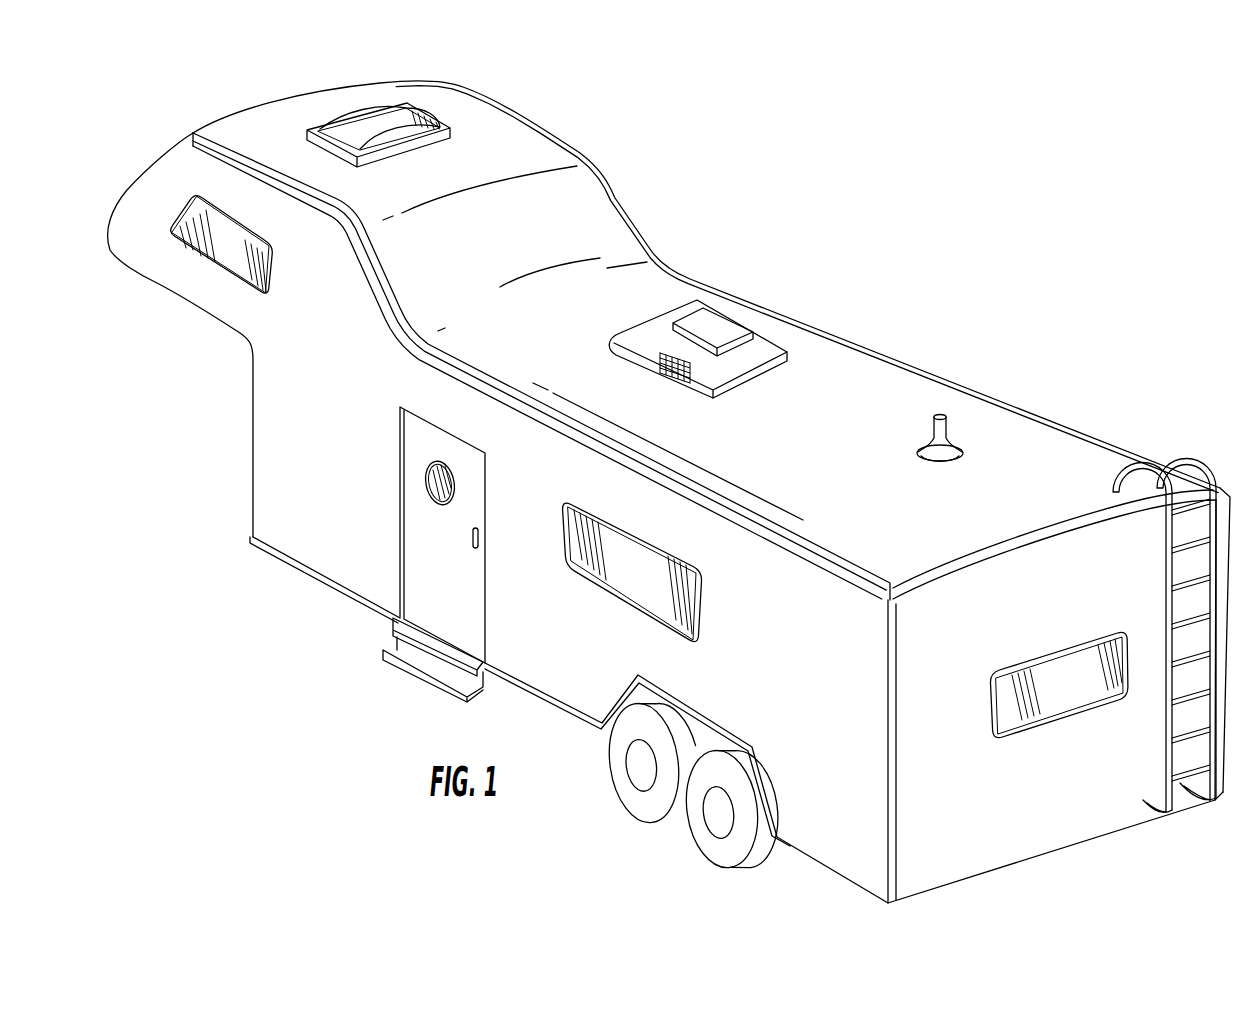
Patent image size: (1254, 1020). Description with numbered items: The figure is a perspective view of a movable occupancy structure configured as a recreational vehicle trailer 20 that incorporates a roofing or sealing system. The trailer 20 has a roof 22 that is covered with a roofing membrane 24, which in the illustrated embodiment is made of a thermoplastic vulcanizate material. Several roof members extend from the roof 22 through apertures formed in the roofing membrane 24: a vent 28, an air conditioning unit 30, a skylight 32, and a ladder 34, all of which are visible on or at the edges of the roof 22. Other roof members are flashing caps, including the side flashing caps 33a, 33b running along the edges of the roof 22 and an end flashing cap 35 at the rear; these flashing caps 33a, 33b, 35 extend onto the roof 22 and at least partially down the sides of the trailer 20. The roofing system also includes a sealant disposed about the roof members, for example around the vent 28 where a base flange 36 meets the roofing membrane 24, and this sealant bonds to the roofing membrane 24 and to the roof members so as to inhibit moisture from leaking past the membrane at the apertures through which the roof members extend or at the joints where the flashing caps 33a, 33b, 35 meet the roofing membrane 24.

The trailer 20 is at (153, 126).
The roof 22 is at (895, 385).
The roofing membrane 24 is at (1067, 473).
The vent 28 is at (915, 433).
The air conditioning unit 30 is at (793, 352).
The skylight 32 is at (432, 115).
The side flashing cap 33a is at (390, 338).
The side flashing cap 33b is at (578, 152).
The ladder 34 is at (1196, 462).
The end flashing cap 35 is at (1106, 500).
The vent base flange 36 is at (948, 456).